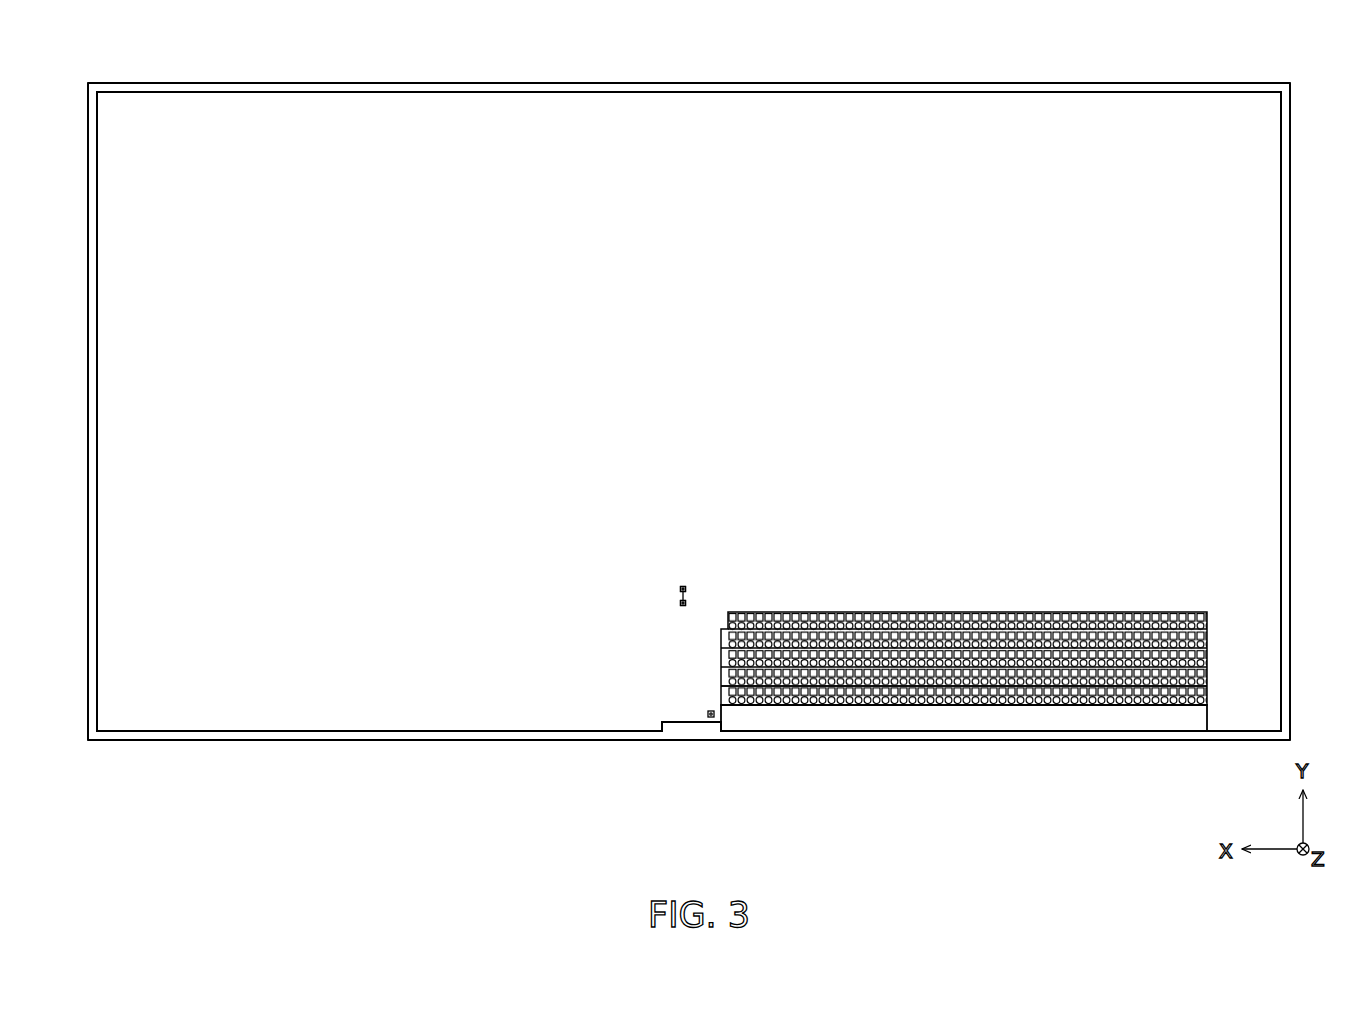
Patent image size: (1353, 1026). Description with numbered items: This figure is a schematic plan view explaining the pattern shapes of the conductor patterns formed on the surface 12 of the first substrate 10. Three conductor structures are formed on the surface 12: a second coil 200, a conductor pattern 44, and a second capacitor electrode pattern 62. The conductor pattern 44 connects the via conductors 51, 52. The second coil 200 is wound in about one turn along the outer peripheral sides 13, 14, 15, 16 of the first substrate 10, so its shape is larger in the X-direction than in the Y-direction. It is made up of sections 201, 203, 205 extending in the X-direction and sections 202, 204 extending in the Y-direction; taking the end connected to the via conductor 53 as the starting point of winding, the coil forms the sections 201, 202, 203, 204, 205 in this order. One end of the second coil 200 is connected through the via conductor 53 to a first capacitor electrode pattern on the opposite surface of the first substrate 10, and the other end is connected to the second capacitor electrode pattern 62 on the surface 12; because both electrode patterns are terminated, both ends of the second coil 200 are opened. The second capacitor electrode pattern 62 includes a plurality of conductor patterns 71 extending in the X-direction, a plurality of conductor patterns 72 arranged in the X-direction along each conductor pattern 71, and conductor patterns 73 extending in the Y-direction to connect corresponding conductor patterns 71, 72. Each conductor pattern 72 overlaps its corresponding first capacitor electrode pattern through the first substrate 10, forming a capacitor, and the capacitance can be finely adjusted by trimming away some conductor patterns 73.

The first substrate 10 is at (1252, 82).
The surface 12 is at (1076, 110).
The outer peripheral side 13 is at (480, 742).
The outer peripheral side 14 is at (88, 378).
The outer peripheral side 15 is at (900, 80).
The outer peripheral side 16 is at (1291, 380).
The conductor pattern 44 is at (679, 597).
The via conductor 51 is at (686, 587).
The via conductor 52 is at (688, 603).
The via conductor 53 is at (709, 709).
The second capacitor electrode pattern 62 is at (1078, 578).
The conductor pattern 71 is at (1078, 706).
The conductor pattern 72 is at (1207, 692).
The conductor pattern 73 is at (1207, 700).
The second coil 200 is at (1272, 480).
The section 201 is at (461, 729).
The section 202 is at (97, 413).
The section 203 is at (690, 93).
The section 204 is at (1281, 410).
The section 205 is at (866, 742).